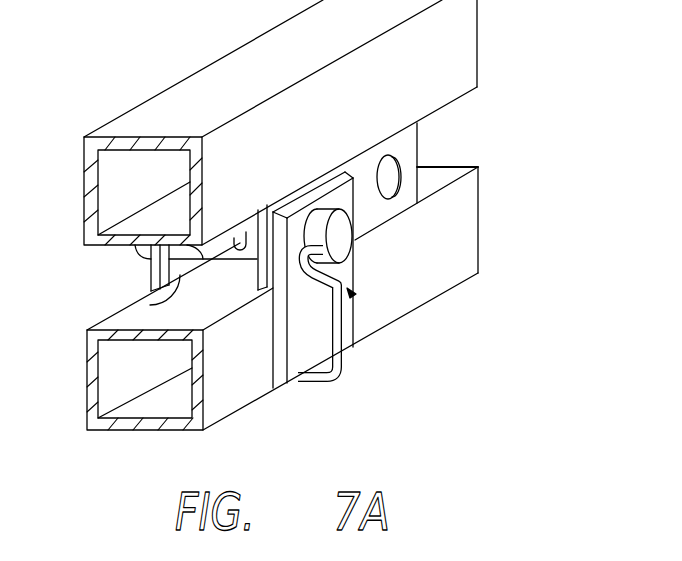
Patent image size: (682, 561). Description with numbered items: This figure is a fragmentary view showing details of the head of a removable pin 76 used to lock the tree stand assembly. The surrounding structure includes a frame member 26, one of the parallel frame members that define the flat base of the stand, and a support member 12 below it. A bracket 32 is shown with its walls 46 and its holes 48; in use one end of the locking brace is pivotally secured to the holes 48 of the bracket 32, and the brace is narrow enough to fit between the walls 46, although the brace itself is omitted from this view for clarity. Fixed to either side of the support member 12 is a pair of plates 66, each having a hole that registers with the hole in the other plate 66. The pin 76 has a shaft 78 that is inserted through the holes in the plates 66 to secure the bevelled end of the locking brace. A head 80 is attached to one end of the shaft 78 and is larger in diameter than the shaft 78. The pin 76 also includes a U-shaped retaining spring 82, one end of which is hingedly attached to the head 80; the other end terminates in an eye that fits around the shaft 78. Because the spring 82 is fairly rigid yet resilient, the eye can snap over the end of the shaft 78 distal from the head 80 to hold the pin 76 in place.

The support member 12 is at (458, 267).
The frame member 26 is at (460, 78).
The bracket 32 is at (418, 142).
The walls 46 is at (247, 296).
The holes 48 is at (396, 190).
The plates 66 is at (301, 345).
The pin 76 is at (352, 292).
The shaft 78 is at (246, 232).
The head 80 is at (343, 243).
The U-shaped retaining spring 82 is at (343, 381).